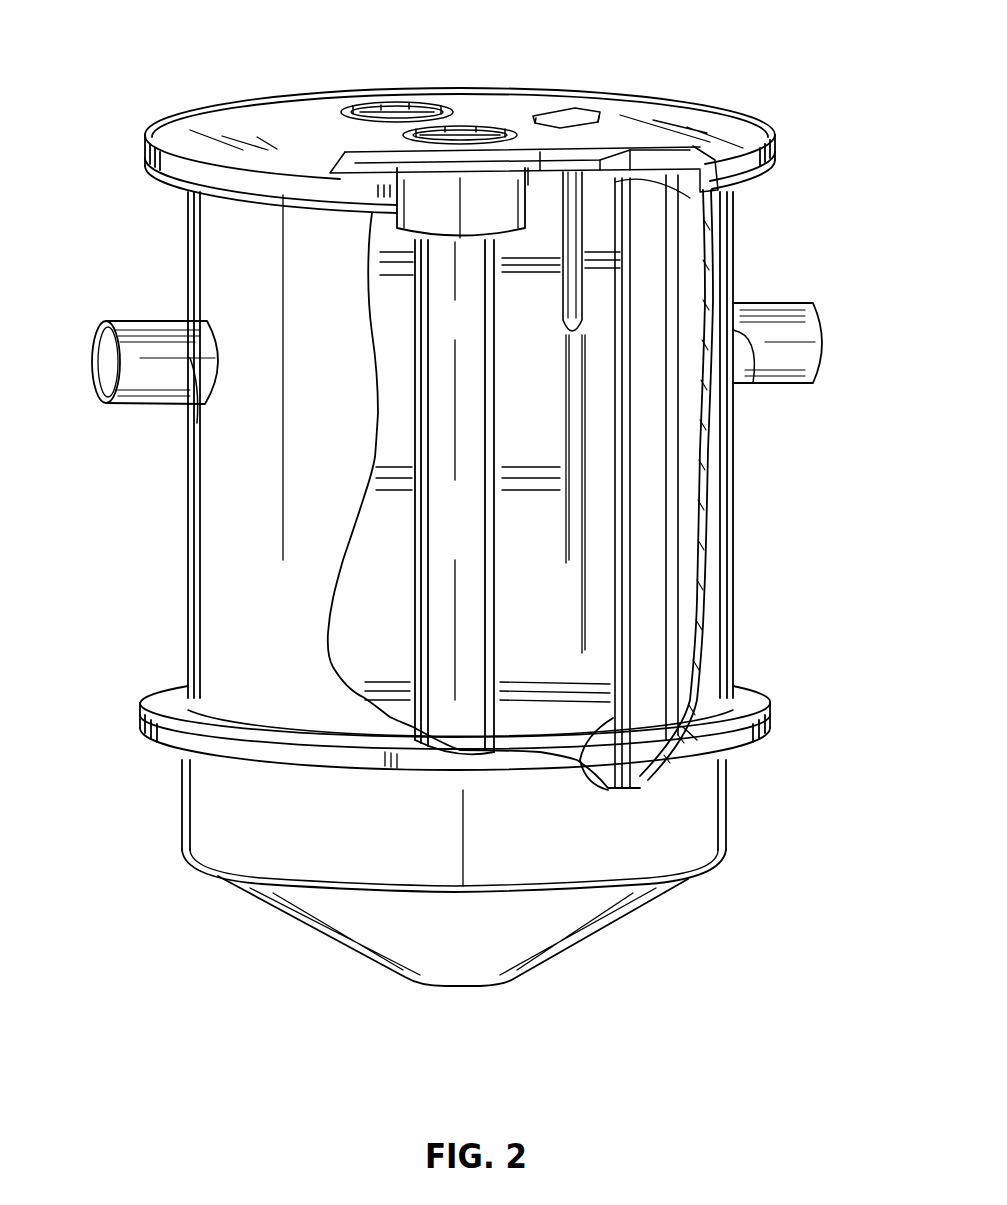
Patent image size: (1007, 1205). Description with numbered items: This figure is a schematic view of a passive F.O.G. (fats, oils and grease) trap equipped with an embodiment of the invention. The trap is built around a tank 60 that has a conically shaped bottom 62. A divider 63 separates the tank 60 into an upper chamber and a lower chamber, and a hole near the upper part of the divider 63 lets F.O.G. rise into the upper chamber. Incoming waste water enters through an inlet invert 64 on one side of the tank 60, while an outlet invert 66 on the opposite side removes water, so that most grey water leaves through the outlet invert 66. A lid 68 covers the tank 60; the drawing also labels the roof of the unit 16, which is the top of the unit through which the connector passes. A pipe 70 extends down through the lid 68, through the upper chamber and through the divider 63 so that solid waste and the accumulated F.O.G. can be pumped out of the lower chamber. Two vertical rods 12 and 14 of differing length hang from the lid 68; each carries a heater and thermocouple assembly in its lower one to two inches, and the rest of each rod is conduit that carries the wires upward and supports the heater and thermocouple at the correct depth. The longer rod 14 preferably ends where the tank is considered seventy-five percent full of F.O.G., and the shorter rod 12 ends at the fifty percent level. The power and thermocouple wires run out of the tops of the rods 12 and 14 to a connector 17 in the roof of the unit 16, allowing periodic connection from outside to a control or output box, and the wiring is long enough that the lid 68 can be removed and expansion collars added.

The rod 12 is at (566, 378).
The rod 14 is at (586, 447).
The lid 16 is at (710, 122).
The connector 17 is at (580, 112).
The tank 60 is at (700, 573).
The conically shaped bottom 62 is at (593, 933).
The divider 63 is at (613, 718).
The inlet invert 64 is at (135, 322).
The outlet invert 66 is at (790, 303).
The lid 68 is at (223, 115).
The pipe 70 is at (438, 323).